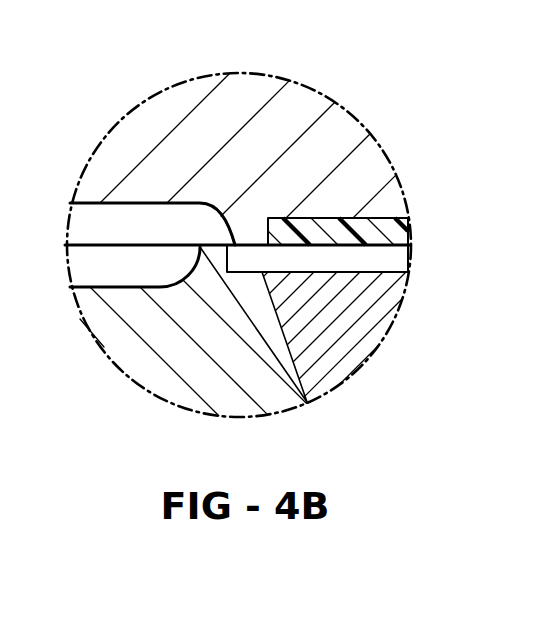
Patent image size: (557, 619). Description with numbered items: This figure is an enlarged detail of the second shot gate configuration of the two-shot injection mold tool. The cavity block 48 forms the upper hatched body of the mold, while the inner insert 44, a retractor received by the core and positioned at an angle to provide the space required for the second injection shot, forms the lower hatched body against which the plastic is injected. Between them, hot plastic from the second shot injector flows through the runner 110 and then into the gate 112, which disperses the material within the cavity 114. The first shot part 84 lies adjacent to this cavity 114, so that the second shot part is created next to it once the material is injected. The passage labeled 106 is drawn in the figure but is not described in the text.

The inner insert 44 is at (362, 337).
The cavity block 48 is at (299, 104).
The first shot part 84 is at (406, 232).
The upper passage 106 is at (117, 192).
The runner 110 is at (80, 265).
The gate 112 is at (229, 215).
The cavity 114 is at (399, 258).